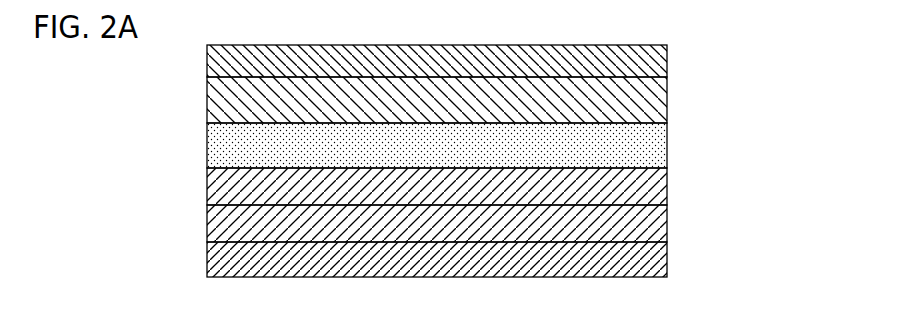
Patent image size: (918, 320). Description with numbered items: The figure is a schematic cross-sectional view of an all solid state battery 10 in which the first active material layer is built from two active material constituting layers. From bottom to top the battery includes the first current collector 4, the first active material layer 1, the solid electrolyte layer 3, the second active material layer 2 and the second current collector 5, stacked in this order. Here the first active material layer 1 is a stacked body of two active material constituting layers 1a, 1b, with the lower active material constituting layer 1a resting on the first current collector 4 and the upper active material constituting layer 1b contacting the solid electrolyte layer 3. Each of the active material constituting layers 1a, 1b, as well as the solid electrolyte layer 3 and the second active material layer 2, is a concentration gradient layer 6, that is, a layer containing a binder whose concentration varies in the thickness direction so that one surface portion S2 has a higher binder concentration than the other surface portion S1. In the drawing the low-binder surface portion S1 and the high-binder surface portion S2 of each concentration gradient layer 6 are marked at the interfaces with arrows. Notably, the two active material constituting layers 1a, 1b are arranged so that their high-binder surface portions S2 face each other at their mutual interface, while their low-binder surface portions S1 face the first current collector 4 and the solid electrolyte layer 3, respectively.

The all solid state battery 10 is at (496, 151).
The second current collector 5 is at (650, 65).
The second active material layer 2 is at (650, 102).
The solid electrolyte layer 3 is at (650, 148).
The first active material layer 1 is at (513, 203).
The active material constituting layer 1b is at (655, 182).
The active material constituting layer 1a is at (655, 213).
The concentration gradient layer 6 is at (491, 205).
The first current collector 4 is at (655, 258).
The surface portion with low binder concentration S1 is at (208, 83).
The surface portion with high binder concentration S2 is at (208, 117).